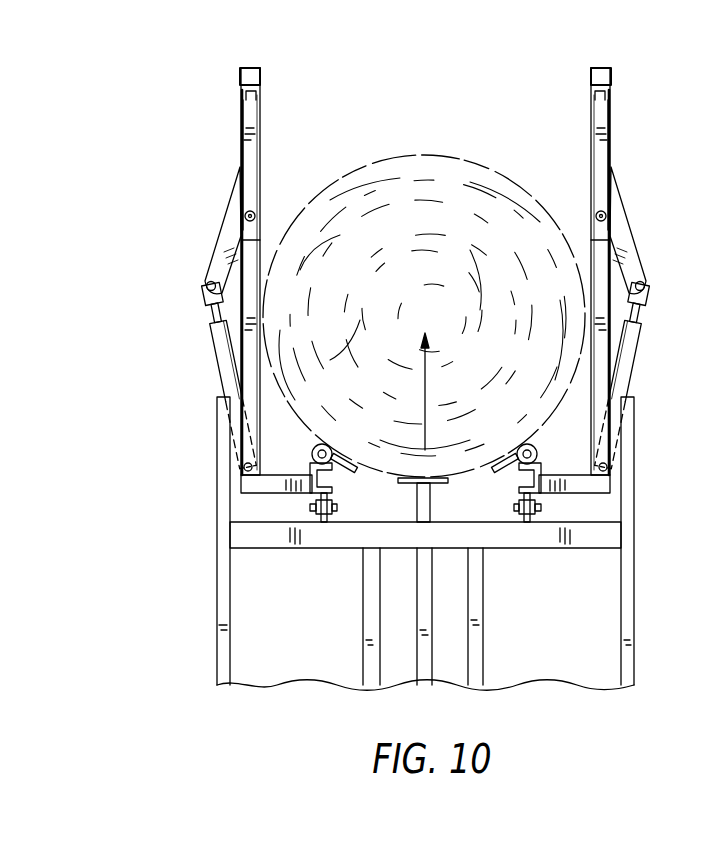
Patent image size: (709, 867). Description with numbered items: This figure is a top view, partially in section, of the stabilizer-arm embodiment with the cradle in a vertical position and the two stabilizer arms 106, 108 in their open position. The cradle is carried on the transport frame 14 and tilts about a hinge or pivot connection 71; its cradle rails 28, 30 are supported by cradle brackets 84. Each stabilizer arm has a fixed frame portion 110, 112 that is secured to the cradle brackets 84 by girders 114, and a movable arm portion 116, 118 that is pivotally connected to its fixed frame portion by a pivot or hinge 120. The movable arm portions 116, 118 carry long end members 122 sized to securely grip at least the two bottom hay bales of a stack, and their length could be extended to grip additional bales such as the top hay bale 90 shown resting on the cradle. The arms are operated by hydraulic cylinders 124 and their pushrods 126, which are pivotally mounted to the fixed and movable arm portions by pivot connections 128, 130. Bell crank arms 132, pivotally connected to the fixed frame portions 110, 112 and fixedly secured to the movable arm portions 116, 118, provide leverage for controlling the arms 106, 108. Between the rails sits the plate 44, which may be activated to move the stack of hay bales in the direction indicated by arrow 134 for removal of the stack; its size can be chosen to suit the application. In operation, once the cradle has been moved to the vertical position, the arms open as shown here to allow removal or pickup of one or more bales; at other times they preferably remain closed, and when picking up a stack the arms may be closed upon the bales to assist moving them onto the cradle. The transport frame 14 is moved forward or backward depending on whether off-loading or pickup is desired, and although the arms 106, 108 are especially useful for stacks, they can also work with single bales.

The transport frame 14 is at (634, 632).
The cradle rail 28 is at (312, 452).
The cradle rail 30 is at (536, 453).
The plate 44 is at (440, 483).
The hinge or pivot connection 71 is at (333, 518).
The cradle bracket 84 is at (308, 482).
The top hay bale 90 is at (440, 160).
The stabilizer arm 106 is at (606, 68).
The stabilizer arm 108 is at (246, 68).
The fixed frame portion 110 is at (243, 383).
The fixed frame portion 112 is at (600, 360).
The girder 114 is at (273, 495).
The movable arm portion 116 is at (246, 125).
The movable arm portion 118 is at (605, 131).
The pivot or hinge 120 is at (247, 212).
The end member 122 is at (262, 76).
The hydraulic cylinder 124 is at (215, 357).
The pushrod 126 is at (212, 313).
The pivot connection 128 is at (203, 284).
The pivot connection 130 is at (244, 467).
The bell crank arm 132 is at (228, 248).
The arrow 134 is at (447, 391).